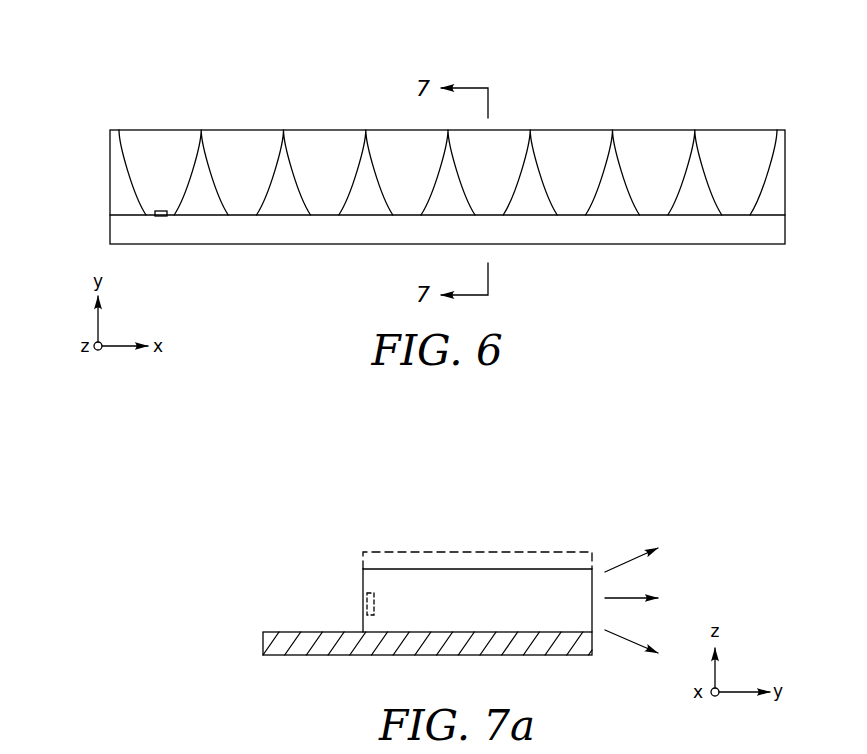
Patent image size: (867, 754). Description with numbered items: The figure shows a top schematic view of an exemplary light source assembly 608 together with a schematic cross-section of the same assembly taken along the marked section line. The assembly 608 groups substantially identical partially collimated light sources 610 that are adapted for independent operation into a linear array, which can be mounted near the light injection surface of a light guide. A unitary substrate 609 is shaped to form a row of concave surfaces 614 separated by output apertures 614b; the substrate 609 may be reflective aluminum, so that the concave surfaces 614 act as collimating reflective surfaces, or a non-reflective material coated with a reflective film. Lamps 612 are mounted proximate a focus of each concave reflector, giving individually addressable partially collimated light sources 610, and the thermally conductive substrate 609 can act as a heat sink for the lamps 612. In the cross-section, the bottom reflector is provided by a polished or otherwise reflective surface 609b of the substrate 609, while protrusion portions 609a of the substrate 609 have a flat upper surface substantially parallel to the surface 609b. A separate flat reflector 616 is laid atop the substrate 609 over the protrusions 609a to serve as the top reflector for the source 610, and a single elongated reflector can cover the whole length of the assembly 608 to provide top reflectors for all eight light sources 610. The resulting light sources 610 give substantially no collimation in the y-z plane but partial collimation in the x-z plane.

In FIG. 6, the light source assembly 608 is at (184, 44).
In FIG. 7a, the light source assembly 608 is at (288, 535).
In FIG. 6, the unitary substrate 609 is at (110, 181).
In FIG. 7a, the unitary substrate 609 is at (523, 656).
In FIG. 6, the protrusion portions 609a is at (700, 203).
In FIG. 7a, the protrusion portions 609a is at (539, 567).
In FIG. 7a, the reflective surface 609b is at (410, 631).
In FIG. 6, the partially collimated light sources 610 is at (569, 121).
In FIG. 7a, the partially collimated light sources 610 is at (293, 555).
In FIG. 6, the lamps 612 is at (160, 217).
In FIG. 7a, the lamps 612 is at (366, 605).
In FIG. 6, the concave surfaces 614 is at (208, 162).
In FIG. 6, the output apertures 614b is at (391, 126).
In FIG. 7a, the flat reflector 616 is at (480, 551).